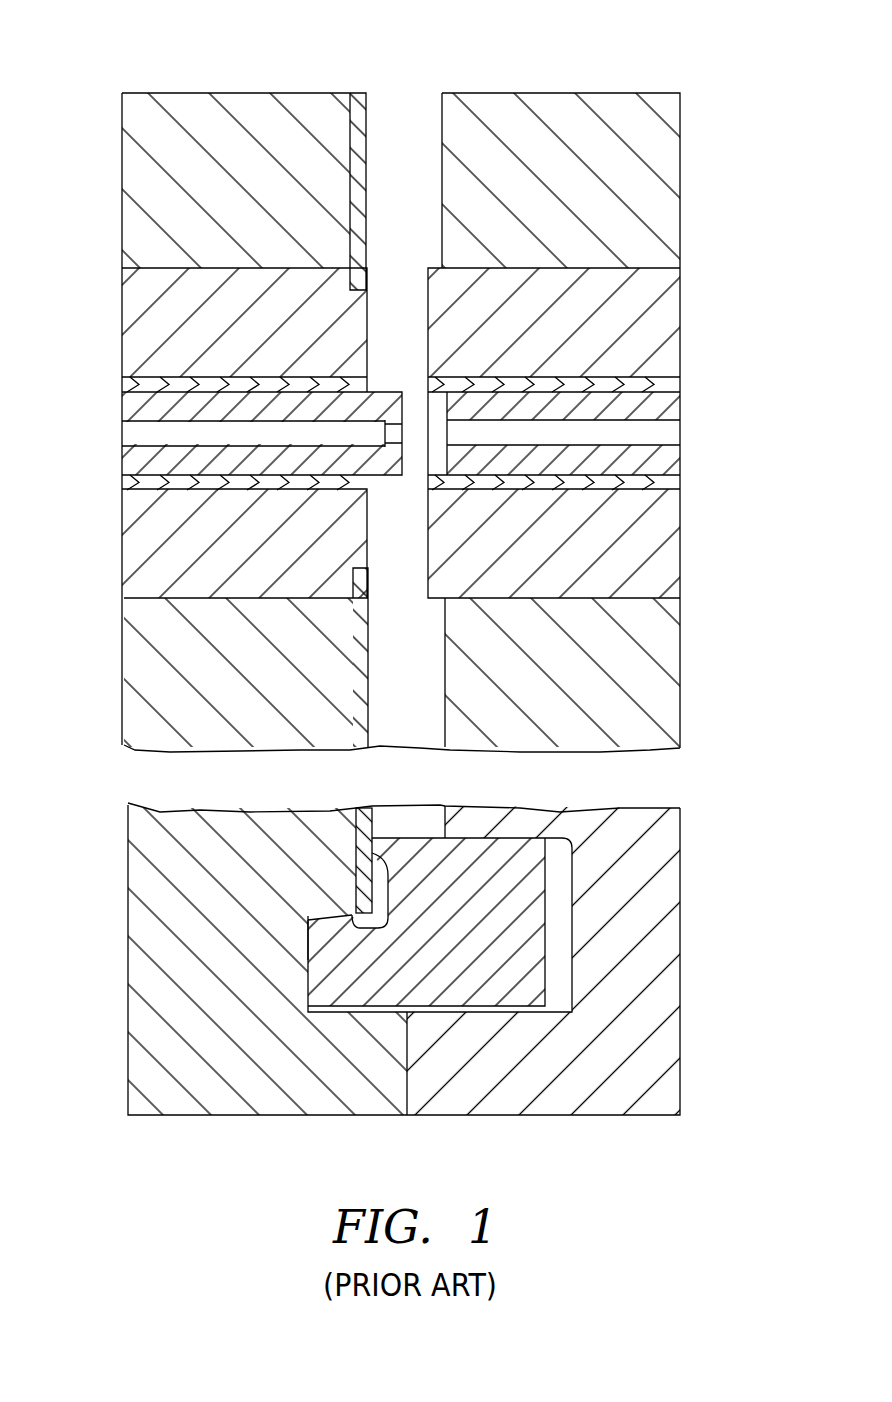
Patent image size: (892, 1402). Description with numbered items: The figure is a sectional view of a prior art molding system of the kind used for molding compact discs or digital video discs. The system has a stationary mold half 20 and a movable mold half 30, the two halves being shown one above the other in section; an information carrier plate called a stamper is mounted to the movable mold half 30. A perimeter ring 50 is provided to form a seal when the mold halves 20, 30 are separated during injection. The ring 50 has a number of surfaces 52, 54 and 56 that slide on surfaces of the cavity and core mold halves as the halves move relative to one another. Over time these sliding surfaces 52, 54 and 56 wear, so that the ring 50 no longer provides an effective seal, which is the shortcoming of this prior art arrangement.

The stationary mold half 20 is at (563, 93).
The movable mold half 30 is at (232, 93).
The perimeter ring 50 is at (495, 990).
The surface 52 is at (408, 838).
The surface 54 is at (372, 853).
The surface 56 is at (308, 952).